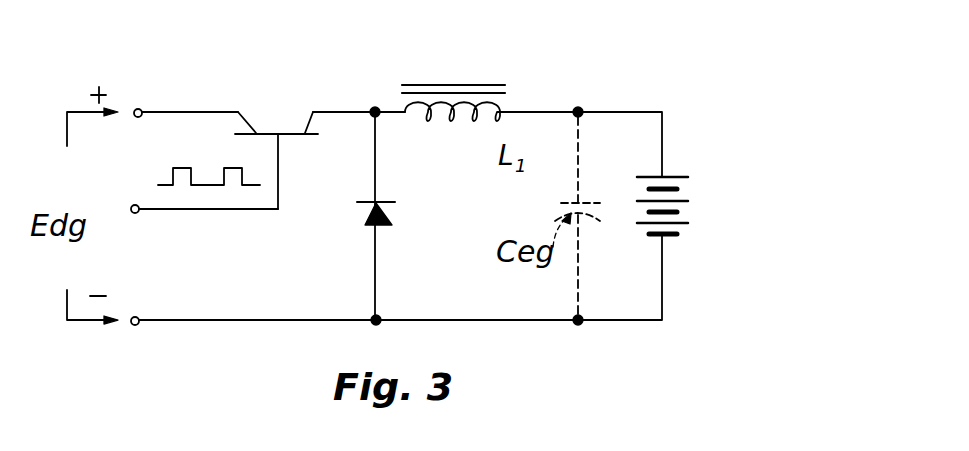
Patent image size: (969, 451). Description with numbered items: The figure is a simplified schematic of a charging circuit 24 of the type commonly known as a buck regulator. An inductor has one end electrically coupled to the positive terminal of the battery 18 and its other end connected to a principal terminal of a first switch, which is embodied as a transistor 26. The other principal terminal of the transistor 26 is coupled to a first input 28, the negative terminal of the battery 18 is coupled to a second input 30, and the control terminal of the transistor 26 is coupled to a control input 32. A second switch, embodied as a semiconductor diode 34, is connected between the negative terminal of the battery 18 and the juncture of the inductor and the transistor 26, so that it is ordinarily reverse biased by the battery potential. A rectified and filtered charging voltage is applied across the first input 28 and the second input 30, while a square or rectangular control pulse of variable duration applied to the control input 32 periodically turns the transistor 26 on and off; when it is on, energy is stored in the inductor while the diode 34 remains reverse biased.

The battery 18 is at (678, 190).
The charging circuit 24 is at (627, 43).
The transistor 26 is at (270, 130).
The first input 28 is at (141, 109).
The second input 30 is at (141, 317).
The control input 32 is at (137, 214).
The semiconductor diode 34 is at (383, 226).